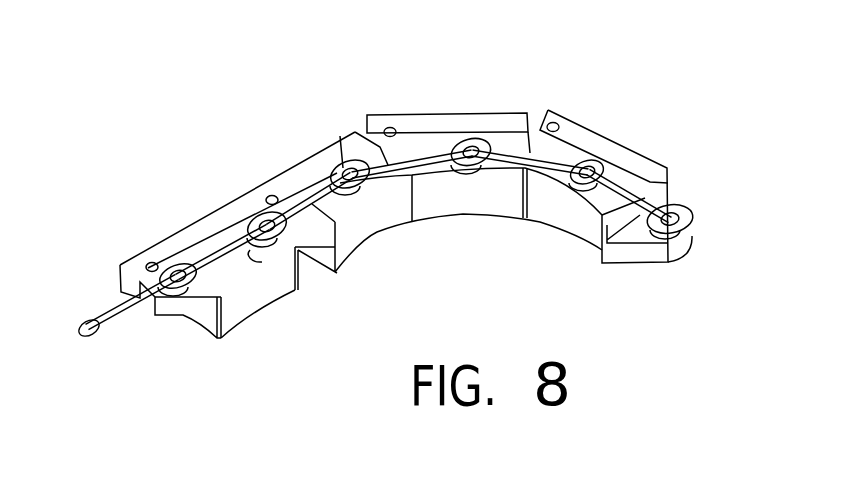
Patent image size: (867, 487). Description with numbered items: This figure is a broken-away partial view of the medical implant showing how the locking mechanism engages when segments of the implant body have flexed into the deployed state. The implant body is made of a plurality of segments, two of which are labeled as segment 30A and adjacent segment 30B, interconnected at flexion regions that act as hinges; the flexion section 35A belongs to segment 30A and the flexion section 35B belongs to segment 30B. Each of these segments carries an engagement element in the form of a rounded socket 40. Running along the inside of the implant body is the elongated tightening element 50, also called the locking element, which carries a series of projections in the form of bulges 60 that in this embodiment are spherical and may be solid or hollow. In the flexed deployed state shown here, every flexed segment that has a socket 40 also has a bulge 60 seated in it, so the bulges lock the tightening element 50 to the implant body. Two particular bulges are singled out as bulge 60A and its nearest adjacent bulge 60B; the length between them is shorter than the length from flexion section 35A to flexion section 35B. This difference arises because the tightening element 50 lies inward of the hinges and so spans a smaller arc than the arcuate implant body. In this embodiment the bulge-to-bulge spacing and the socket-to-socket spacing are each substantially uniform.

The segment 30A is at (647, 163).
The segment 30B is at (503, 122).
The flexion section 35A is at (557, 123).
The flexion section 35B is at (393, 128).
The socket 40 is at (165, 277).
The tightening element 50 is at (100, 325).
The bulge 60 is at (672, 302).
The bulge 60A is at (589, 178).
The bulge 60B is at (476, 158).